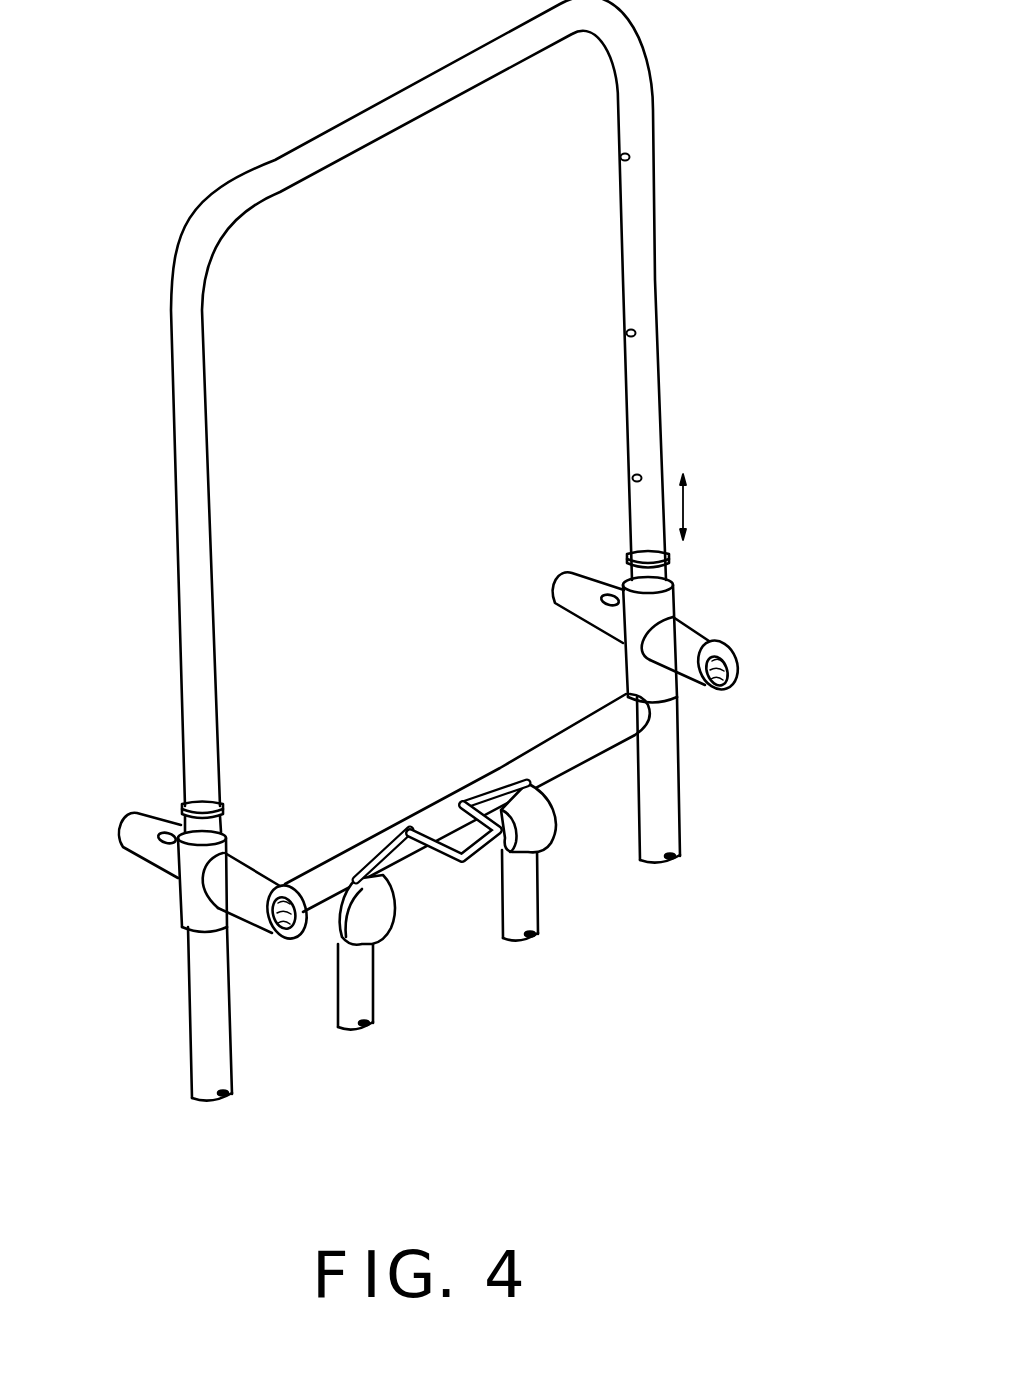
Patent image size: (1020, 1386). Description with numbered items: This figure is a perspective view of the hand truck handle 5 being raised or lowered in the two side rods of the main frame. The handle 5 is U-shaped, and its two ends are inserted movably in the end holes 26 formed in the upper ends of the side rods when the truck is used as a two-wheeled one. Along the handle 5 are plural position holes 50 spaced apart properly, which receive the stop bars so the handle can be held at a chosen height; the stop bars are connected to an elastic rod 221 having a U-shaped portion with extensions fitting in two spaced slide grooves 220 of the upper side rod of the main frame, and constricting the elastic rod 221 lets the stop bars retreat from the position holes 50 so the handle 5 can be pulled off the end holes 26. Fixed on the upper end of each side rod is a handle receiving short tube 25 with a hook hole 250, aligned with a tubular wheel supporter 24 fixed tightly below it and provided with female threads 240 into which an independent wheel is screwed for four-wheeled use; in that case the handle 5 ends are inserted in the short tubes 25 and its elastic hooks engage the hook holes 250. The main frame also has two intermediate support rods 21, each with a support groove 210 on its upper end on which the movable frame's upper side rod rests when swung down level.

The handle 5 is at (648, 301).
The position holes 50 is at (640, 476).
The end holes 26 is at (670, 559).
The handle receiving short tube 25 is at (566, 590).
The hook holes 250 is at (603, 580).
The tubular wheel supporter 24 is at (720, 641).
The female threads 240 is at (724, 689).
The support groove 210 is at (543, 812).
The slide grooves 220 is at (388, 850).
The elastic rod 221 is at (448, 866).
The support rods 21 is at (522, 893).